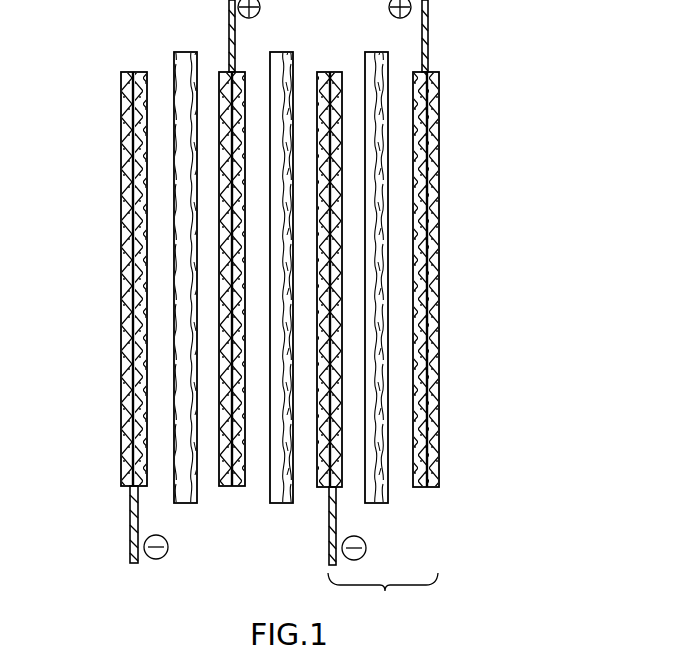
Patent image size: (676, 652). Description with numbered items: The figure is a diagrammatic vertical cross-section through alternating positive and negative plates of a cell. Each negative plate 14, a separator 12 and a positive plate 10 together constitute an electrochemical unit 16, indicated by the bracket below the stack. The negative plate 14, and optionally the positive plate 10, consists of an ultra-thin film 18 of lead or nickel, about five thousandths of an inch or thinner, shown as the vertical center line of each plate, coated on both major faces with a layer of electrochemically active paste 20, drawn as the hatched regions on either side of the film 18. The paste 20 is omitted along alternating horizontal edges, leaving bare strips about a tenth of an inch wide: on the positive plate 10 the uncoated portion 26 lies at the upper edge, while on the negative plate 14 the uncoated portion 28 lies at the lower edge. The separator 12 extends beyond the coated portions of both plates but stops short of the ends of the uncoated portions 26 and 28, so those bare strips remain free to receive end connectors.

The positive plate 10 is at (236, 496).
The separator 12 is at (183, 502).
The negative plate 14 is at (132, 62).
The electrochemical unit 16 is at (383, 597).
The ultra-thin film 18 is at (132, 337).
The electrochemically active paste 20 is at (140, 242).
The uncoated upper edge portion 26 is at (237, 38).
The uncoated lower edge portion 28 is at (130, 518).